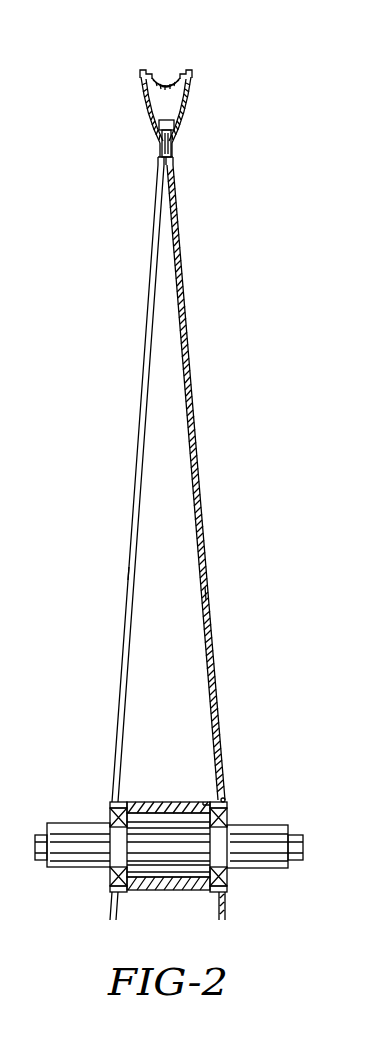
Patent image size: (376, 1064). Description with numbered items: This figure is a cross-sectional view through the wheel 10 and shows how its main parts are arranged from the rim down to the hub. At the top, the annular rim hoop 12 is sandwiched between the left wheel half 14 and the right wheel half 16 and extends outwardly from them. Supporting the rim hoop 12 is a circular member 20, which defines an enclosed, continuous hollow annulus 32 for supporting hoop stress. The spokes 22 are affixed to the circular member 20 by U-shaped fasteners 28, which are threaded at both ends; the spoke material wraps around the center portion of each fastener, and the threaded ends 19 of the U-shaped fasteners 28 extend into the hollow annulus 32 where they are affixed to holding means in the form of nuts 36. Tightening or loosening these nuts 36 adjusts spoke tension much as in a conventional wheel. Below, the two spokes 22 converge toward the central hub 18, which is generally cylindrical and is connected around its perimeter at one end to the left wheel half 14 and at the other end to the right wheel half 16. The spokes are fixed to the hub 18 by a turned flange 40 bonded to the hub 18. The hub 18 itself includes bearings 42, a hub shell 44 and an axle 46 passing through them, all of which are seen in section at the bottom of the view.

The wheel 10 is at (227, 382).
The rim hoop 12 is at (188, 72).
The left wheel half 14 is at (145, 318).
The right wheel half 16 is at (188, 262).
The hub 18 is at (111, 803).
The threaded ends 19 is at (157, 127).
The circular member 20 is at (187, 93).
The spokes 22 is at (128, 567).
The U-shaped fasteners 28 is at (174, 155).
The hollow annulus 32 is at (160, 106).
The nuts 36 is at (171, 129).
The turned flange 40 is at (220, 776).
The bearings 42 is at (226, 814).
The hub shell 44 is at (152, 893).
The axle 46 is at (265, 827).